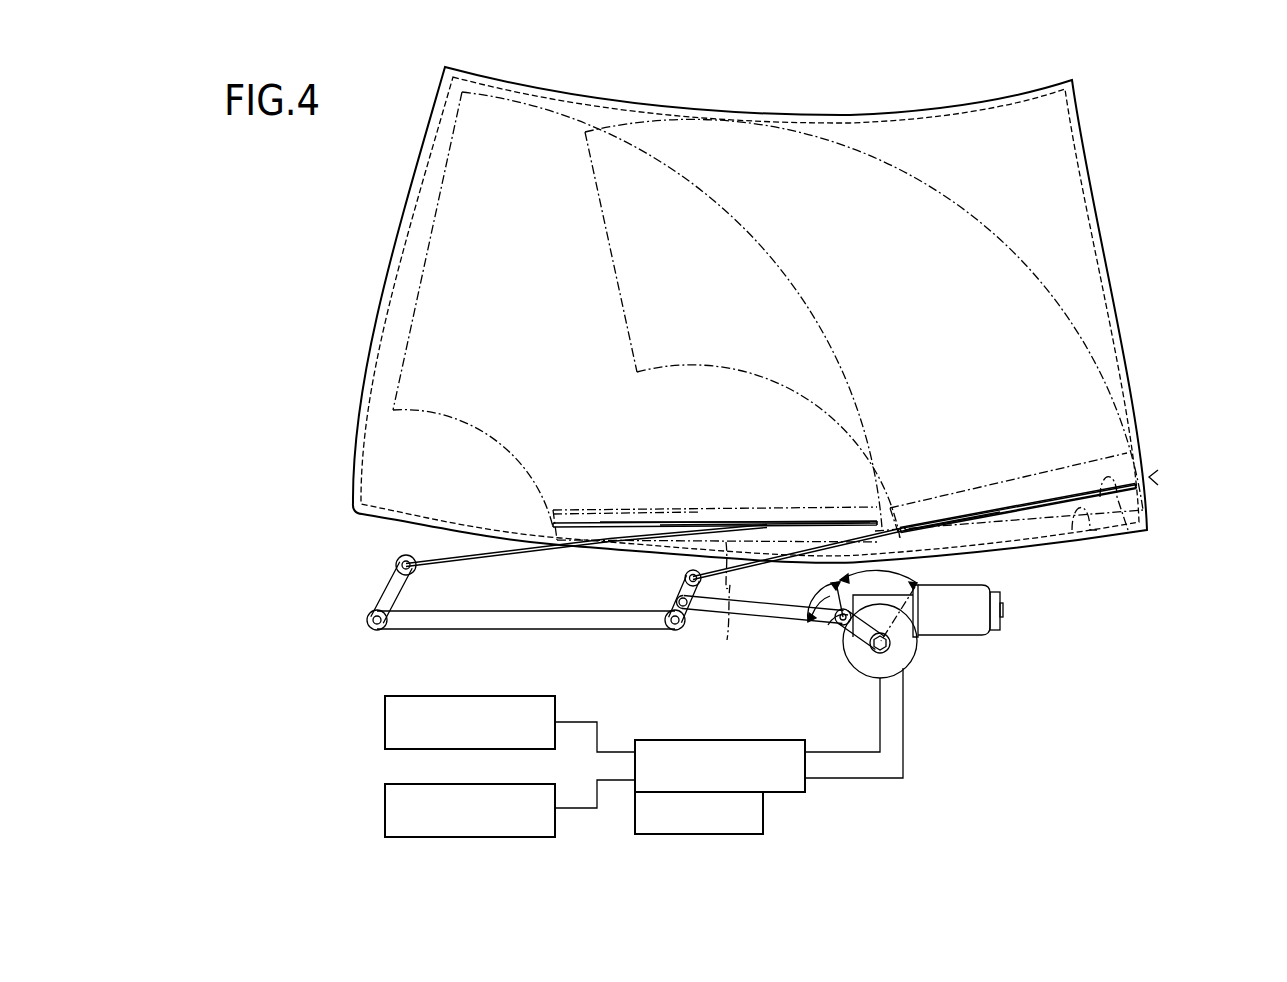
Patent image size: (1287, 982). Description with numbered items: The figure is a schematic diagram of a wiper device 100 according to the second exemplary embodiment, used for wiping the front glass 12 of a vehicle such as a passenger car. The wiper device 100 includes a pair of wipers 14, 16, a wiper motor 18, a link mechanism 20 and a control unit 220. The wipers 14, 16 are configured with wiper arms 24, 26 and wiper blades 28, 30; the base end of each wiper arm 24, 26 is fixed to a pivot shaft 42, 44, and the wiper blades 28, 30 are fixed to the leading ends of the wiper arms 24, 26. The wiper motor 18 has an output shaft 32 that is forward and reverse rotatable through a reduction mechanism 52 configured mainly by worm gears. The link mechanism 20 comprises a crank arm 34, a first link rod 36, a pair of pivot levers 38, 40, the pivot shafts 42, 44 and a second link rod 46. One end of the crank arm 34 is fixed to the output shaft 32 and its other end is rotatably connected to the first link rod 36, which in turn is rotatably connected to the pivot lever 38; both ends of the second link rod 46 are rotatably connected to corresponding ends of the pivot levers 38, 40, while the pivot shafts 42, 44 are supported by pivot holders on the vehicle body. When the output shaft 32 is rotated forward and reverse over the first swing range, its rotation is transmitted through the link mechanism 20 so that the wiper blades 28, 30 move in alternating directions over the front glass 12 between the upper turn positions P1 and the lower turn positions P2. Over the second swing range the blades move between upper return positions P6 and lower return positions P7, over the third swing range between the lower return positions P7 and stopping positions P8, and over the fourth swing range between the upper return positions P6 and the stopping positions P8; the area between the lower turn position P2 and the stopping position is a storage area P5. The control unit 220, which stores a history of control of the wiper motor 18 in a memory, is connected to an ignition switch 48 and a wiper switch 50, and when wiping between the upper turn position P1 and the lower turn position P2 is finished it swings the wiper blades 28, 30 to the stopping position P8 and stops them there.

The front glass 12 is at (786, 110).
The wiper 14 is at (1075, 494).
The wiper 16 is at (816, 519).
The wiper motor 18 is at (1003, 610).
The link mechanism 20 is at (698, 645).
The wiper arm 24 is at (888, 528).
The wiper arm 26 is at (623, 538).
The wiper blade 28 is at (932, 524).
The wiper blade 30 is at (658, 522).
The output shaft 32 is at (915, 658).
The crank arm 34 is at (862, 660).
The first link rod 36 is at (772, 619).
The pivot lever 38 is at (676, 592).
The pivot lever 40 is at (496, 607).
The pivot shaft 42 is at (685, 578).
The pivot shaft 44 is at (396, 565).
The second link rod 46 is at (545, 630).
The ignition switch 48 is at (385, 725).
The wiper switch 50 is at (385, 808).
The reduction mechanism 52 is at (918, 638).
The wiper device 100 is at (815, 752).
The control unit 220 is at (787, 793).
The upper turn position P1 is at (440, 250).
The lower turn position P2 is at (771, 505).
The storage area P5 is at (1170, 475).
The upper return position P6 is at (697, 510).
The lower return position P7 is at (1115, 573).
The stopping position P8 is at (553, 528).